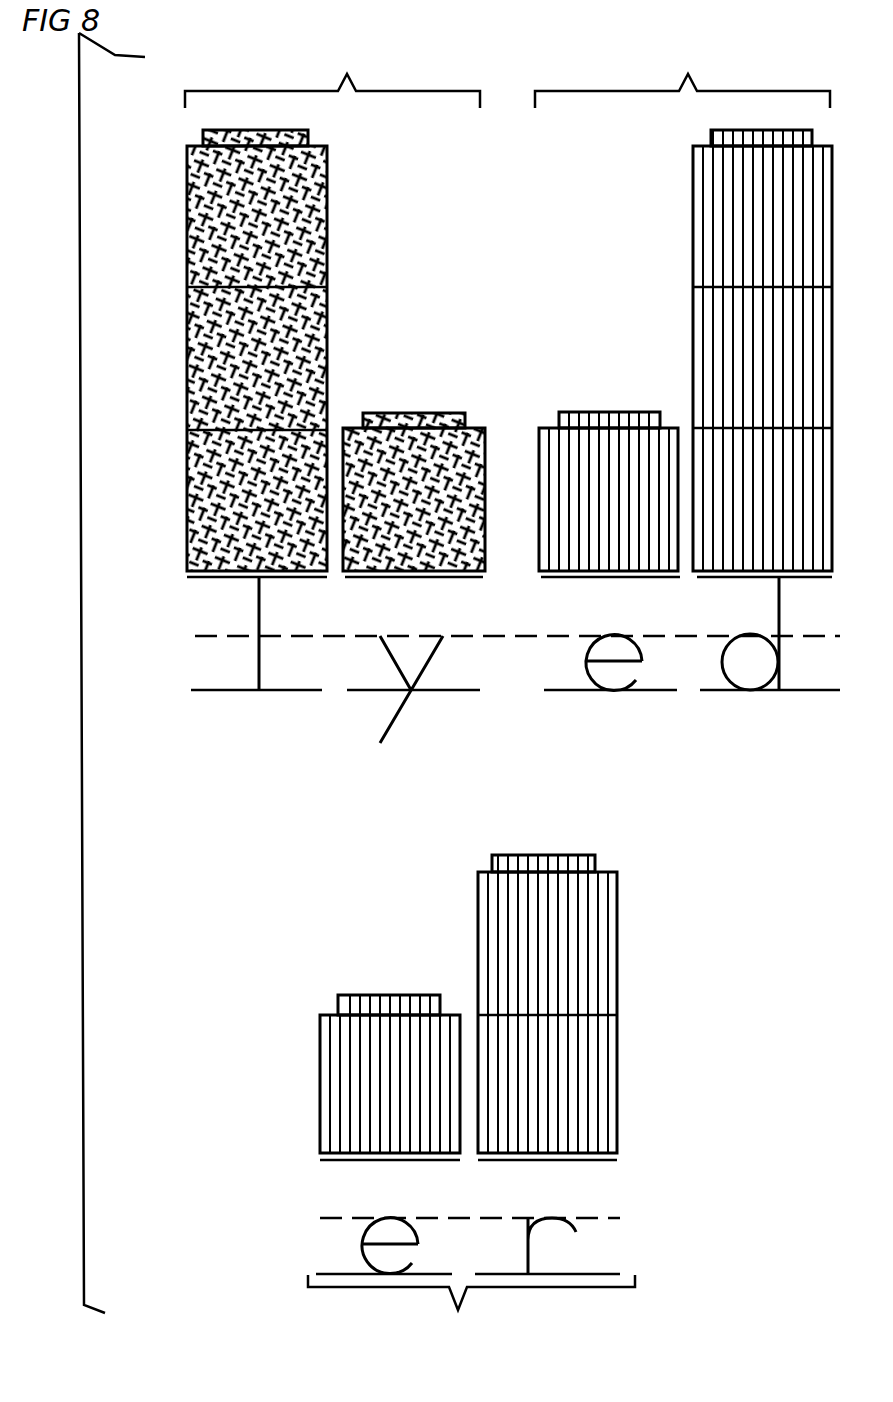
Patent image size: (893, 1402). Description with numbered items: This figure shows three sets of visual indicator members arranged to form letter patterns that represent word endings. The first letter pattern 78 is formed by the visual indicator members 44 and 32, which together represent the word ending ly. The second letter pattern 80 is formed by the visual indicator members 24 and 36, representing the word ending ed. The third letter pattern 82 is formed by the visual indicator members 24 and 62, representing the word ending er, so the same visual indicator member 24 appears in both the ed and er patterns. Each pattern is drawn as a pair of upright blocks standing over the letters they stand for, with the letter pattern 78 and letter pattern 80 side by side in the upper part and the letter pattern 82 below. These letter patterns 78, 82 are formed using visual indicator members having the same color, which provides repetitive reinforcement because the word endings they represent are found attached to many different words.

The letter pattern 78 is at (332, 76).
The letter pattern 80 is at (682, 76).
The letter pattern 82 is at (471, 1315).
The visual indicator member 44 is at (327, 166).
The visual indicator member 32 is at (465, 412).
The visual indicator member 36 is at (693, 192).
The visual indicator member 24 is at (572, 412).
The visual indicator member 62 is at (617, 872).